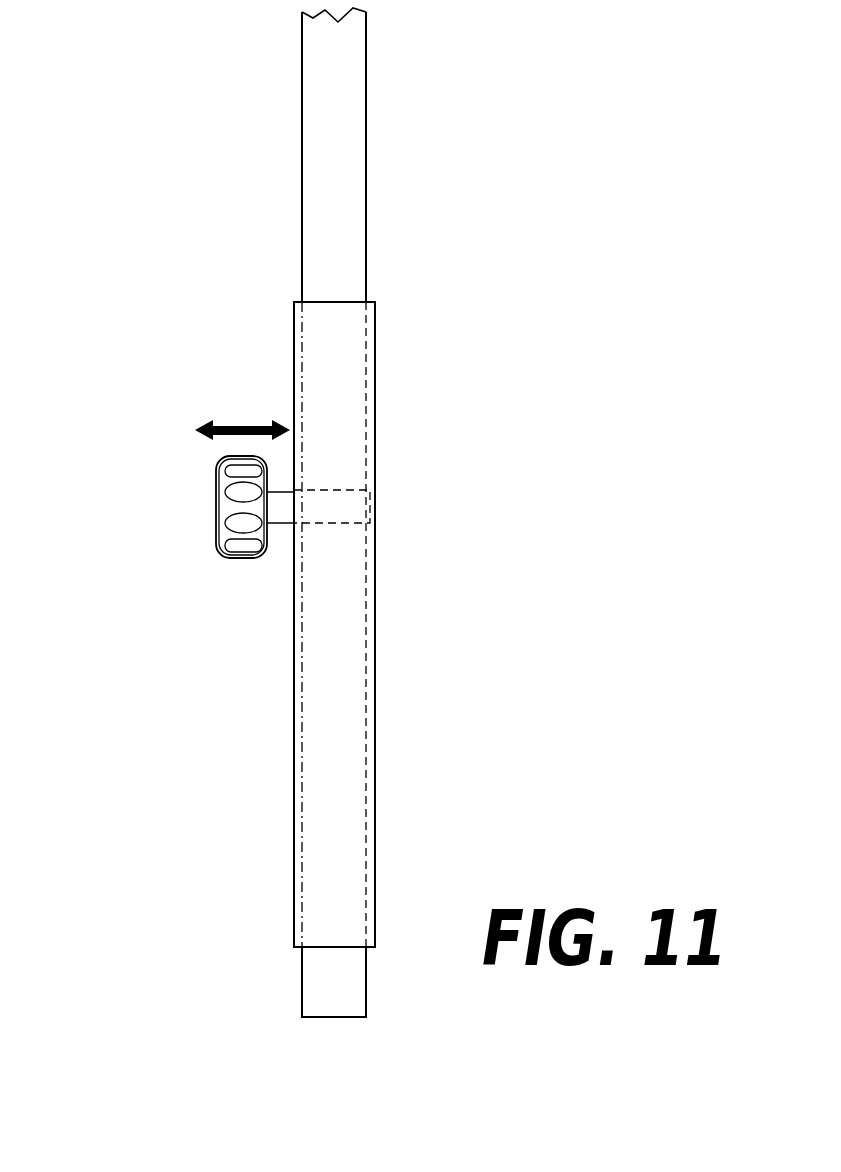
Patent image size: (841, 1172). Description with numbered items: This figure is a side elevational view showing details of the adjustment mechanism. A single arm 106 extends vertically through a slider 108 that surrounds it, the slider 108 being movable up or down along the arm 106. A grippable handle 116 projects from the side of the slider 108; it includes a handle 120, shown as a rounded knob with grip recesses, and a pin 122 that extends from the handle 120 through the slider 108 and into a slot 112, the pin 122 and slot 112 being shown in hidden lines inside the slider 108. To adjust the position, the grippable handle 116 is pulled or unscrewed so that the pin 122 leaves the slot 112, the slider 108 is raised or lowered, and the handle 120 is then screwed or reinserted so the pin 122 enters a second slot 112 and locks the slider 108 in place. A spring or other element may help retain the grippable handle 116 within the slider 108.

The single arm 106 is at (366, 90).
The slider 108 is at (375, 312).
The slot 112 is at (340, 488).
The grippable handle 116 is at (131, 466).
The handle 120 is at (233, 557).
The pin 122 is at (287, 523).